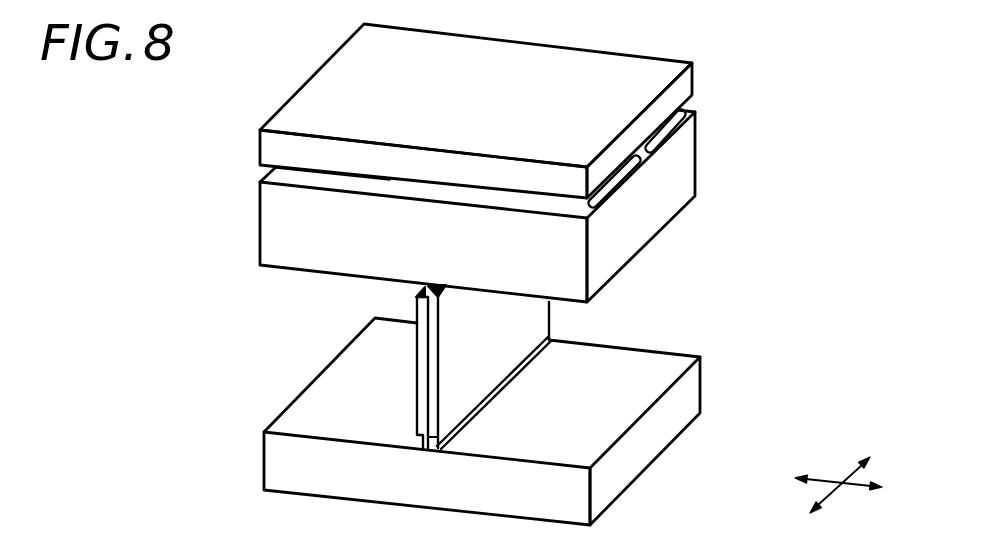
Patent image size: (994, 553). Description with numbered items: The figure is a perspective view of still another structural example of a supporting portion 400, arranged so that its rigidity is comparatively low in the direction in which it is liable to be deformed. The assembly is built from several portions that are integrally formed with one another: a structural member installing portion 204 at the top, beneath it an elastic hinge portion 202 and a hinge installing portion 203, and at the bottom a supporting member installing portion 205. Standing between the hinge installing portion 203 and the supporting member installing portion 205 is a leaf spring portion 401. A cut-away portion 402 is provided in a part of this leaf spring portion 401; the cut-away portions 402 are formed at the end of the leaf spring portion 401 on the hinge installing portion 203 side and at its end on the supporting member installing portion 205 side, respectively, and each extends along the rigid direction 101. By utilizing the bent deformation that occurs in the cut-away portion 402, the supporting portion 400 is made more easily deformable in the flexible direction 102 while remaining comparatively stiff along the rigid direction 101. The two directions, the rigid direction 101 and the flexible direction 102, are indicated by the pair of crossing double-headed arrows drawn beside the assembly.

The supporting portion 400 is at (294, 75).
The structural member installing portion 204 is at (637, 63).
The hinge installing portion 203 is at (668, 197).
The elastic hinge portion 202 is at (643, 150).
The supporting member installing portion 205 is at (655, 442).
The leaf spring portion 401 is at (423, 413).
The cut-away portion 402 is at (426, 290).
The rigid direction 101 is at (852, 470).
The flexible direction 102 is at (845, 487).